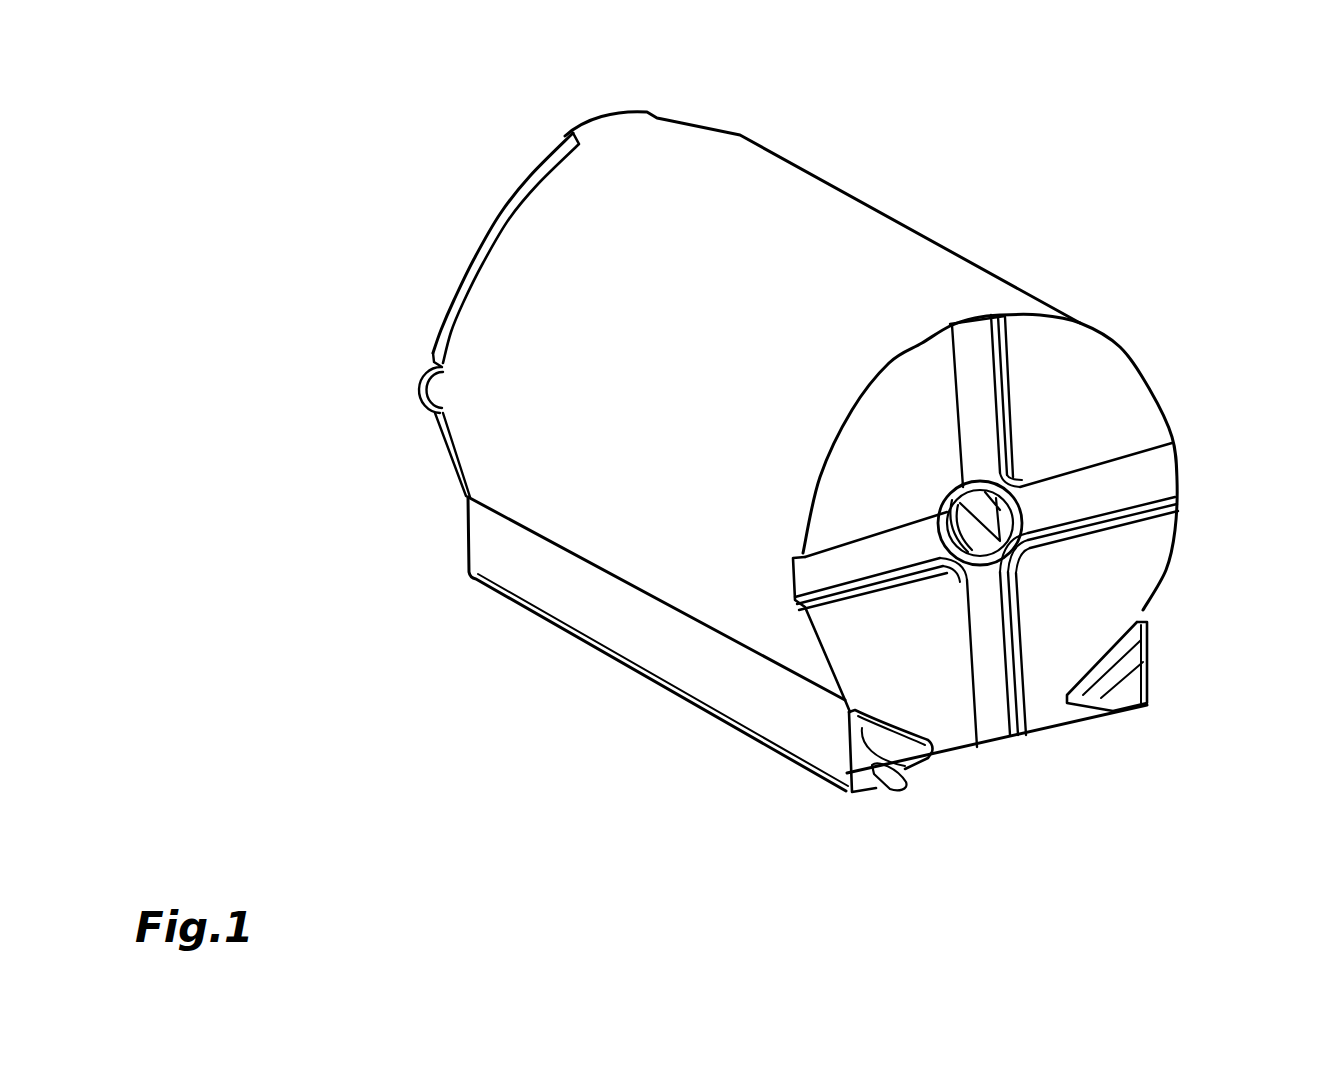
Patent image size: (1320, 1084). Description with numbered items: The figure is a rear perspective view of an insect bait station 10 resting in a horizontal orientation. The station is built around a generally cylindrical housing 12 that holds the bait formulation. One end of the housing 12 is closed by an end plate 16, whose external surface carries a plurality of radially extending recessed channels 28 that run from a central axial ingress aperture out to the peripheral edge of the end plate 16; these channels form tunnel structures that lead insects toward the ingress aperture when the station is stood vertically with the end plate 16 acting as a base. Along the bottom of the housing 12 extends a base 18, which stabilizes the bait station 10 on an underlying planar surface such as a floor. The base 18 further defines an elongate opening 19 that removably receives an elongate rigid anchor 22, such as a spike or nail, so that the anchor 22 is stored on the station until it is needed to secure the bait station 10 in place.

The bait station 10 is at (320, 211).
The housing 12 is at (695, 379).
The end plate 16 is at (1058, 342).
The base 18 is at (630, 622).
The elongate opening 19 is at (862, 732).
The anchor 22 is at (888, 779).
The recessed channels 28 is at (978, 343).